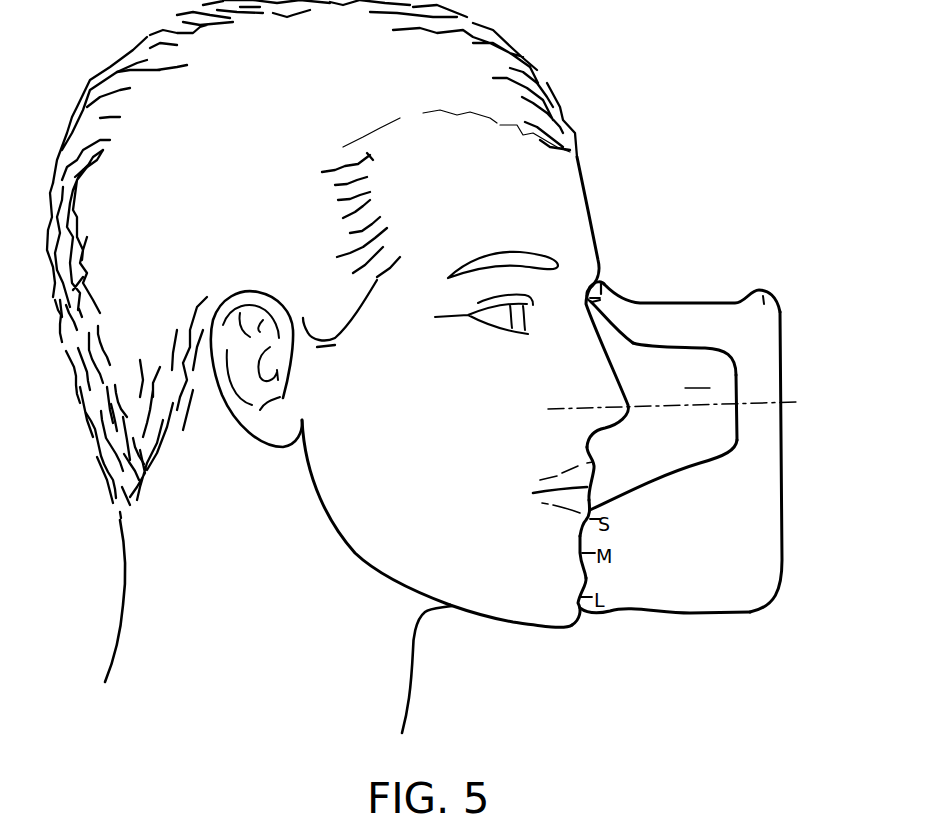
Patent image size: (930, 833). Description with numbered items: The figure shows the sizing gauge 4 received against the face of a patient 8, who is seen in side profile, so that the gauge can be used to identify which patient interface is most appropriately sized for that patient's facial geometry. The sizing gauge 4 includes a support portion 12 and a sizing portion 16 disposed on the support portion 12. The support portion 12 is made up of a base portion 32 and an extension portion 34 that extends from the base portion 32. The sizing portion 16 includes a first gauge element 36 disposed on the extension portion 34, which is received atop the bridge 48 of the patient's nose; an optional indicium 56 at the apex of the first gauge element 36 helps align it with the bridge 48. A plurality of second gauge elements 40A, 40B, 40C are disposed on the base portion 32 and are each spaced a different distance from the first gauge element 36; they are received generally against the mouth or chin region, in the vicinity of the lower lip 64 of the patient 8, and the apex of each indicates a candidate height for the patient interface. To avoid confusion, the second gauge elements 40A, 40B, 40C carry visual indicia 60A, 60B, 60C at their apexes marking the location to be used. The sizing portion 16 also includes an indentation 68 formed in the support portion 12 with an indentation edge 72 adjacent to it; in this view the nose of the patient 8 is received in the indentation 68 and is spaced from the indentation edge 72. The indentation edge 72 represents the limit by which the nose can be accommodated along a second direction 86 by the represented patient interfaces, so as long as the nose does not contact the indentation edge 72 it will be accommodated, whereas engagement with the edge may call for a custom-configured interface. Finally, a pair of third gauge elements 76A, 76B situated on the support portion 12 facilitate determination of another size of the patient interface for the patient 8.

The patient 8 is at (588, 74).
The sizing gauge 4 is at (690, 256).
The third gauge element 76A is at (600, 283).
The third gauge element 76B is at (763, 296).
The indicium 56 is at (600, 306).
The bridge of the nose 48 is at (572, 294).
The first gauge element 36 is at (587, 306).
The extension portion 34 is at (667, 347).
The indentation 68 is at (697, 377).
The second direction 86 is at (550, 410).
The indentation edge 72 is at (733, 410).
The lower lip 64 is at (592, 500).
The second gauge element 40A is at (587, 519).
The second gauge element 40B is at (580, 553).
The second gauge element 40C is at (578, 597).
The visual indicium 60A is at (600, 523).
The visual indicium 60B is at (598, 556).
The visual indicium 60C is at (592, 594).
The sizing portion 16 is at (579, 626).
The base portion 32 is at (678, 615).
The support portion 12 is at (750, 626).